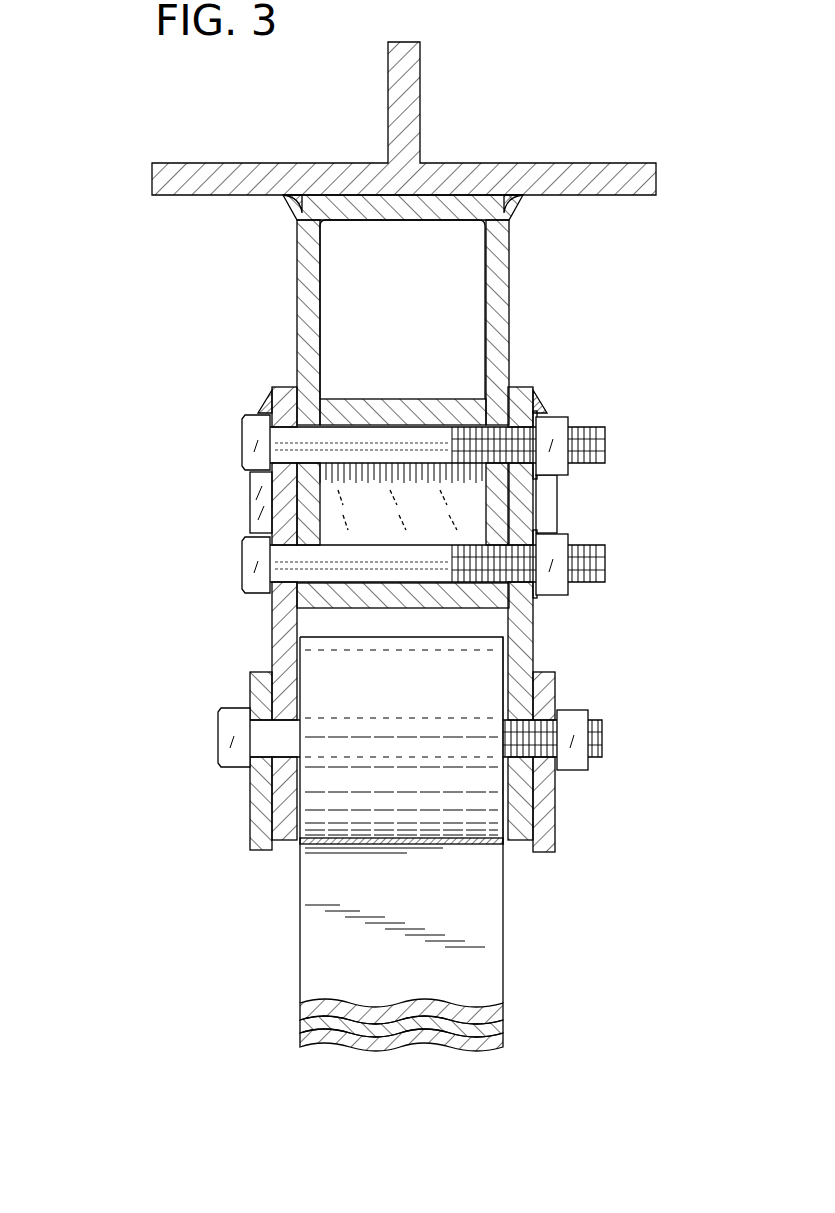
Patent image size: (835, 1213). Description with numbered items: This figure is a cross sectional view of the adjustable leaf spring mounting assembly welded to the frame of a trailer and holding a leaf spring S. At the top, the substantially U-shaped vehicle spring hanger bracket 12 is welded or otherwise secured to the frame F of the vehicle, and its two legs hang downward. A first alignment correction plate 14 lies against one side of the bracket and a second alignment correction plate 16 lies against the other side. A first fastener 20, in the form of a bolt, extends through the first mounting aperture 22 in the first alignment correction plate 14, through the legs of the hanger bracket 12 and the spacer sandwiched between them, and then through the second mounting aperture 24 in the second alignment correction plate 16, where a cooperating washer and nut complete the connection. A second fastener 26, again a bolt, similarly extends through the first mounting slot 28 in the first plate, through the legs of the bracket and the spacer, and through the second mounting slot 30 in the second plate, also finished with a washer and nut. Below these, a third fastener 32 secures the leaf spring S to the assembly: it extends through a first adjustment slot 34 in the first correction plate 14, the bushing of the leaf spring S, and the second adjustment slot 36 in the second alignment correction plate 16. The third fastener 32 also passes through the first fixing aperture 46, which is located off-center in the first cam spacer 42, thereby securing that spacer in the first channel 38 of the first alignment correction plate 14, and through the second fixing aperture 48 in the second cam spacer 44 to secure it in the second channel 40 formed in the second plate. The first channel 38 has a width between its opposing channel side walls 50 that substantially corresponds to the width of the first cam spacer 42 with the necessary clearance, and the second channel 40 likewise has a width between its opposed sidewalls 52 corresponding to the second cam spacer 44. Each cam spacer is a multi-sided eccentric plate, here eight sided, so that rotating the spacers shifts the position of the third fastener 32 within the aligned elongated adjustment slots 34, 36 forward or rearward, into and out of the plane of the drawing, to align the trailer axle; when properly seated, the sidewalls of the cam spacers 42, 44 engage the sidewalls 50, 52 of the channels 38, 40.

The frame F is at (400, 130).
The vehicle spring hanger bracket 12 is at (498, 297).
The first alignment correction plate 14 is at (280, 655).
The second alignment correction plate 16 is at (517, 640).
The first fastener 20 is at (290, 578).
The first mounting aperture 22 is at (275, 538).
The second mounting aperture 24 is at (520, 537).
The second fastener 26 is at (285, 455).
The first mounting slot 28 is at (270, 410).
The second mounting slot 30 is at (525, 413).
The third fastener 32 is at (250, 772).
The first adjustment slot 34 is at (300, 698).
The second adjustment slot 36 is at (503, 690).
The first channel 38 is at (280, 633).
The second channel 40 is at (533, 655).
The first cam spacer 42 is at (250, 833).
The second cam spacer 44 is at (552, 828).
The first fixing aperture 46 is at (252, 690).
The second fixing aperture 48 is at (545, 710).
The channel side walls 50 is at (262, 515).
The channel sidewalls 52 is at (547, 503).
The leaf spring S is at (483, 968).